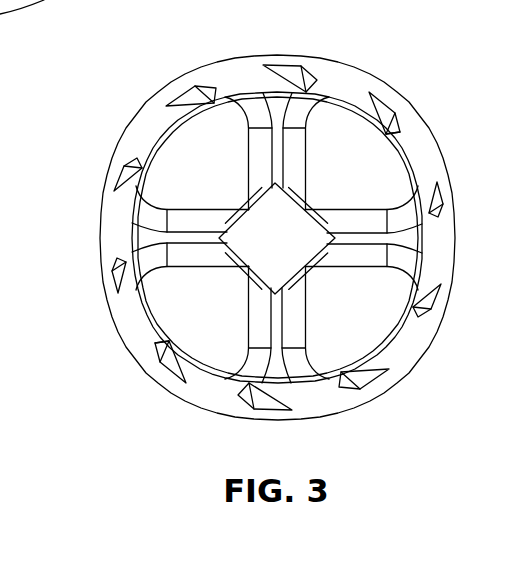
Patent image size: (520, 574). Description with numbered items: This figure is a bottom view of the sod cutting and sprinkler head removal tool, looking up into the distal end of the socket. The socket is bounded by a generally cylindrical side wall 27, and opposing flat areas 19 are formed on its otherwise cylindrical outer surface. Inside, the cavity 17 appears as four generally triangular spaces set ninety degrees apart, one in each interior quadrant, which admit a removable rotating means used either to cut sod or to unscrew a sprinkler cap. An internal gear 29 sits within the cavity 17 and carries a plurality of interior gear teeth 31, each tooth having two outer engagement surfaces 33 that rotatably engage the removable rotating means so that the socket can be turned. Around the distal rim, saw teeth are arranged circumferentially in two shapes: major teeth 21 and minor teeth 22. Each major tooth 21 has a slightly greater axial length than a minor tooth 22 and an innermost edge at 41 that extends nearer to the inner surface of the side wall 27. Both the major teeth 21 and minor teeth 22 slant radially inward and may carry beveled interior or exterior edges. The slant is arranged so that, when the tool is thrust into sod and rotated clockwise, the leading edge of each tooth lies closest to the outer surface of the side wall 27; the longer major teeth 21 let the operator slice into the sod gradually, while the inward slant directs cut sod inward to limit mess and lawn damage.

The cavity 17 is at (376, 329).
The opposing flat areas 19 is at (100, 236).
The major teeth 21 is at (387, 105).
The minor teeth 22 is at (290, 68).
The side wall 27 is at (215, 403).
The internal gear 29 is at (287, 247).
The interior gear teeth 31 is at (249, 153).
The outer engagement surfaces 33 is at (204, 210).
The innermost edge 41 is at (380, 145).